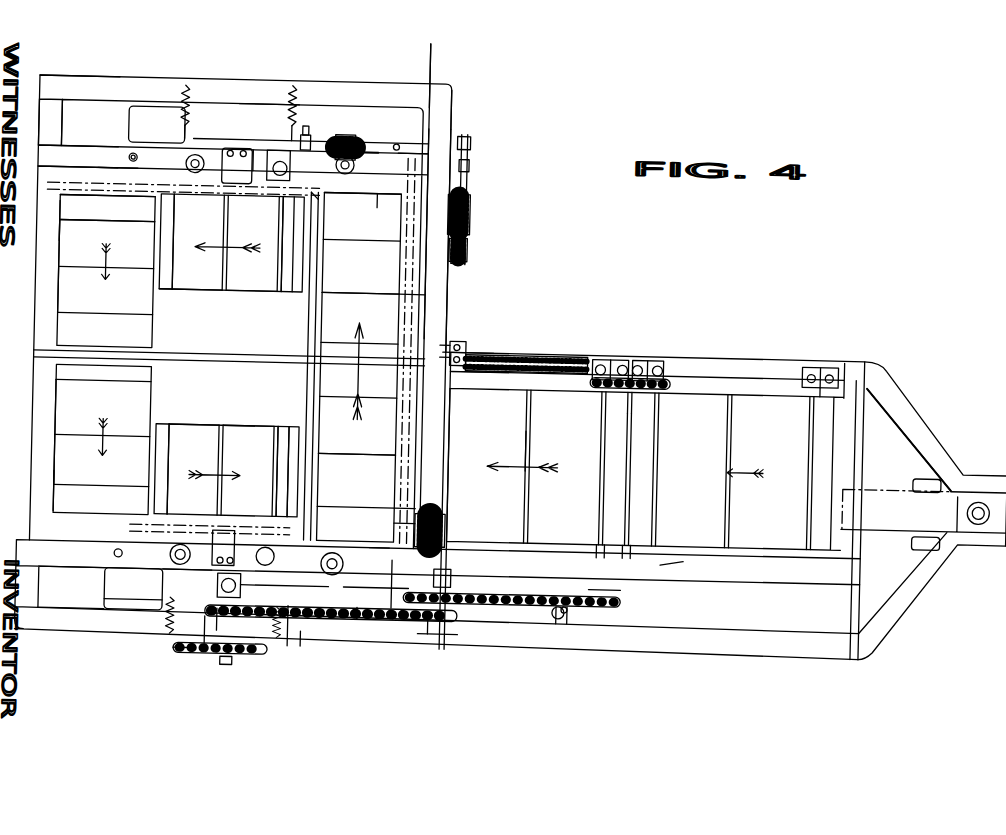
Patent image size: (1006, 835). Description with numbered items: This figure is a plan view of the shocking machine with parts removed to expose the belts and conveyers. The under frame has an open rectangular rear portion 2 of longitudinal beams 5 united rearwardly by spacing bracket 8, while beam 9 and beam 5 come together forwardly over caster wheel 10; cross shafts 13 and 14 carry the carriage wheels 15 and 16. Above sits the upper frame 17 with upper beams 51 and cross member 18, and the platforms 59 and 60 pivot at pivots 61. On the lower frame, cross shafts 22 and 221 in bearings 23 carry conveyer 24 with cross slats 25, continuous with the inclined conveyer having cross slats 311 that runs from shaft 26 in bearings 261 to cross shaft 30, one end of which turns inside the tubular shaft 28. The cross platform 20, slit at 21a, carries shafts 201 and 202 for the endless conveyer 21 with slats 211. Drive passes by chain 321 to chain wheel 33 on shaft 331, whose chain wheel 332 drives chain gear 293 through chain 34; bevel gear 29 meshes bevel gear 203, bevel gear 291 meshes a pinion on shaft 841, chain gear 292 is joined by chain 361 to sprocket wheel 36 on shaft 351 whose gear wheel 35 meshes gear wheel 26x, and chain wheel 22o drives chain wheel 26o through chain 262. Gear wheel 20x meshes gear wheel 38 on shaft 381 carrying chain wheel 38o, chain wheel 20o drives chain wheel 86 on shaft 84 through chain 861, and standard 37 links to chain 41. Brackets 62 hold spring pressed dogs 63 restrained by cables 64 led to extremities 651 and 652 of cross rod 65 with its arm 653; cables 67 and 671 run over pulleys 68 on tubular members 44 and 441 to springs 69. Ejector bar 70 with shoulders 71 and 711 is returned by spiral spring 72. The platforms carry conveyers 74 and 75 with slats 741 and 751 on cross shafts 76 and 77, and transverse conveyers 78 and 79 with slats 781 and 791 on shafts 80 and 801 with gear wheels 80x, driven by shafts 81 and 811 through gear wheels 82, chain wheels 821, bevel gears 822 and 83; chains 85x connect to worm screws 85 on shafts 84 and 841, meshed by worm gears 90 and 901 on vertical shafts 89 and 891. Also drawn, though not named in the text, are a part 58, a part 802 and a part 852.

The rectangular rear portion 2 is at (50, 122).
The chain 41 is at (694, 547).
The longitudinally extending beam 5 is at (939, 570).
The upper frame beam 51 is at (440, 88).
The pivot 61 is at (440, 279).
The spacing bracket 8 is at (437, 600).
The beam 9 is at (780, 348).
The caster wheel 10 is at (923, 517).
The cross shaft 13 is at (241, 96).
The cross shaft 14 is at (240, 659).
The carriage wheel 15 is at (263, 118).
The carriage wheel 16 is at (152, 595).
The upper frame 17 is at (453, 631).
The cross member 18 is at (866, 458).
The cross platform 20 is at (398, 189).
The shaft 201 is at (450, 199).
The gear wheel 20x is at (471, 198).
The chain wheel 20o is at (470, 210).
The shaft 202 is at (432, 501).
The bevel gear 203 is at (423, 514).
The endless conveyer 21 is at (359, 186).
The cross slat 211 is at (376, 446).
The slit 21a is at (391, 558).
The cross shaft 22 is at (847, 354).
The cross shaft 221 is at (661, 534).
The chain wheel 22o is at (662, 383).
The bearing 23 is at (829, 354).
The endless conveyer 24 is at (769, 472).
The cross slat 25 is at (735, 427).
The cross shaft 26 is at (613, 535).
The bearing 261 is at (620, 355).
The chain 262 is at (647, 377).
The chain wheel 26o is at (624, 374).
The gear wheel 26x is at (619, 577).
The tubular shaft 28 is at (453, 568).
The bevel gear 29 is at (448, 531).
The bevel gear 291 is at (471, 573).
The chain gear 292 is at (464, 603).
The chain gear 293 is at (452, 608).
The cross shaft 30 is at (440, 524).
The cross slat 311 is at (535, 430).
The chain 321 is at (218, 634).
The chain wheel 33 is at (253, 652).
The shaft 331 is at (313, 631).
The chain wheel 332 is at (225, 613).
The chain 34 is at (369, 610).
The gear wheel 35 is at (229, 606).
The shaft 351 is at (579, 595).
The sprocket wheel 36 is at (569, 601).
The chain 361 is at (574, 596).
The standard 37 is at (456, 344).
The gear wheel 38 is at (454, 237).
The chain wheel 38o is at (467, 247).
The shaft 381 is at (434, 244).
The tubular member 44 is at (181, 552).
The tubular member 441 is at (349, 543).
The shaft 58 is at (183, 562).
The swingable platform 59 is at (190, 309).
The swingable platform 60 is at (217, 364).
The bracket 62 is at (257, 145).
The spring pressed dog 63 is at (240, 161).
The cable 64 is at (366, 148).
The cross rod 65 is at (415, 419).
The upwardly inclined extremity 651 is at (403, 552).
The upwardly inclined extremity 652 is at (413, 144).
The forwardly projecting arm 653 is at (454, 318).
The cable 67 is at (300, 621).
The cable 671 is at (191, 105).
The pulley 68 is at (183, 104).
The spring 69 is at (294, 83).
The ejector bar 70 is at (275, 459).
The shoulder 71 is at (467, 371).
The shoulder 711 is at (597, 355).
The spiral spring 72 is at (554, 350).
The longitudinally extending conveyer 74 is at (228, 261).
The cross slat 741 is at (278, 279).
The longitudinally extending conveyer 75 is at (391, 324).
The cross slat 751 is at (248, 442).
The cross shaft 76 is at (171, 265).
The cross shaft 77 is at (298, 272).
The transversely extending conveyer 78 is at (84, 289).
The cross slat 781 is at (84, 249).
The transversely extending conveyer 79 is at (76, 459).
The cross slat 791 is at (81, 417).
The longitudinally extending shaft 80 is at (159, 332).
The longitudinally extending shaft 801 is at (61, 210).
The gear wheel 80x is at (62, 487).
The bar 802 is at (472, 343).
The longitudinally extending shaft 81 is at (119, 166).
The longitudinally extending shaft 811 is at (118, 525).
The gear wheel 82 is at (67, 167).
The chain wheel 821 is at (315, 187).
The bevel gear 822 is at (188, 185).
The bevel gear 83 is at (139, 155).
The shaft 84 is at (398, 139).
The shaft 841 is at (374, 561).
The worm screw 85 is at (338, 134).
The worm 852 is at (309, 131).
The chain 85x is at (312, 127).
The chain wheel 86 is at (466, 135).
The chain 861 is at (469, 158).
The vertically directed shaft 89 is at (134, 551).
The vertically directed shaft 891 is at (135, 148).
The worm gear 90 is at (356, 541).
The worm gear 901 is at (383, 205).